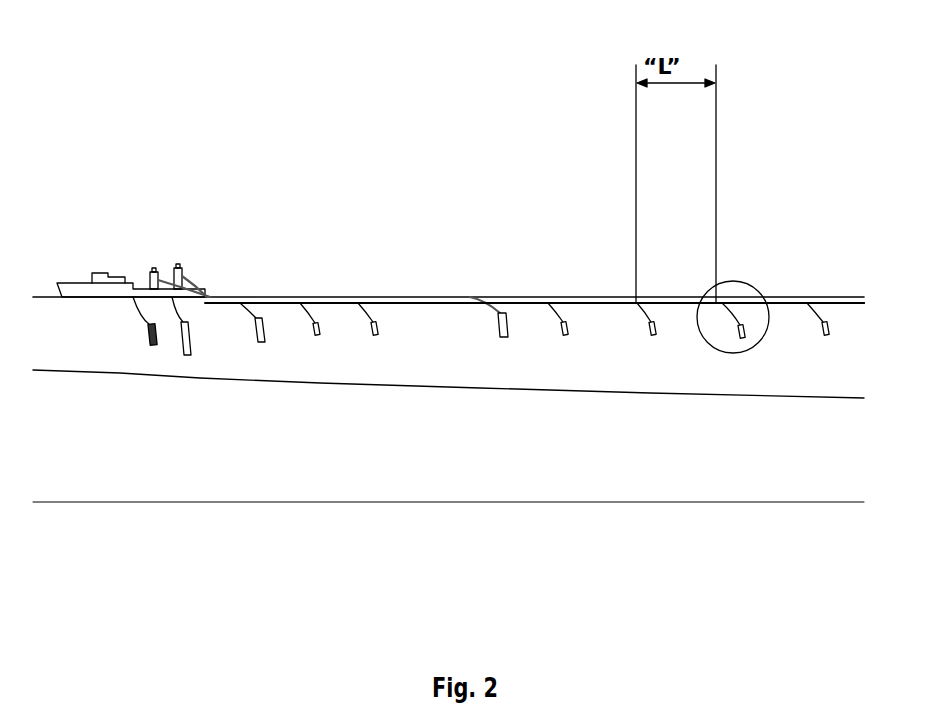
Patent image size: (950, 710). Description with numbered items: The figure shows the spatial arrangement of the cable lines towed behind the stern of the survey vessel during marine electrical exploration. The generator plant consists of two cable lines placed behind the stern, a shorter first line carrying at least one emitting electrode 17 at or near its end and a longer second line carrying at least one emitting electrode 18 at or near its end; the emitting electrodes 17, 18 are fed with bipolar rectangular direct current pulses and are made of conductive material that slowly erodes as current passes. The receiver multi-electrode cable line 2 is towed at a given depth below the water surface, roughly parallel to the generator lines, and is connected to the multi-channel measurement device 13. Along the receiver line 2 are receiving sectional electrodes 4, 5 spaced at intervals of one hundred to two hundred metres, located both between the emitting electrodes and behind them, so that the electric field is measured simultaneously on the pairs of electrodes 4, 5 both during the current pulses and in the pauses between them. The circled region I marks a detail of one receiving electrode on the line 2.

The receiver line 2 is at (712, 161).
The receiving sectional electrode 4 is at (690, 428).
The receiving sectional electrode 5 is at (663, 437).
The multi-channel measurement device 13 is at (534, 180).
The emitting electrode 17 is at (211, 433).
The emitting electrode 18 is at (305, 436).
The detail region I is at (786, 186).